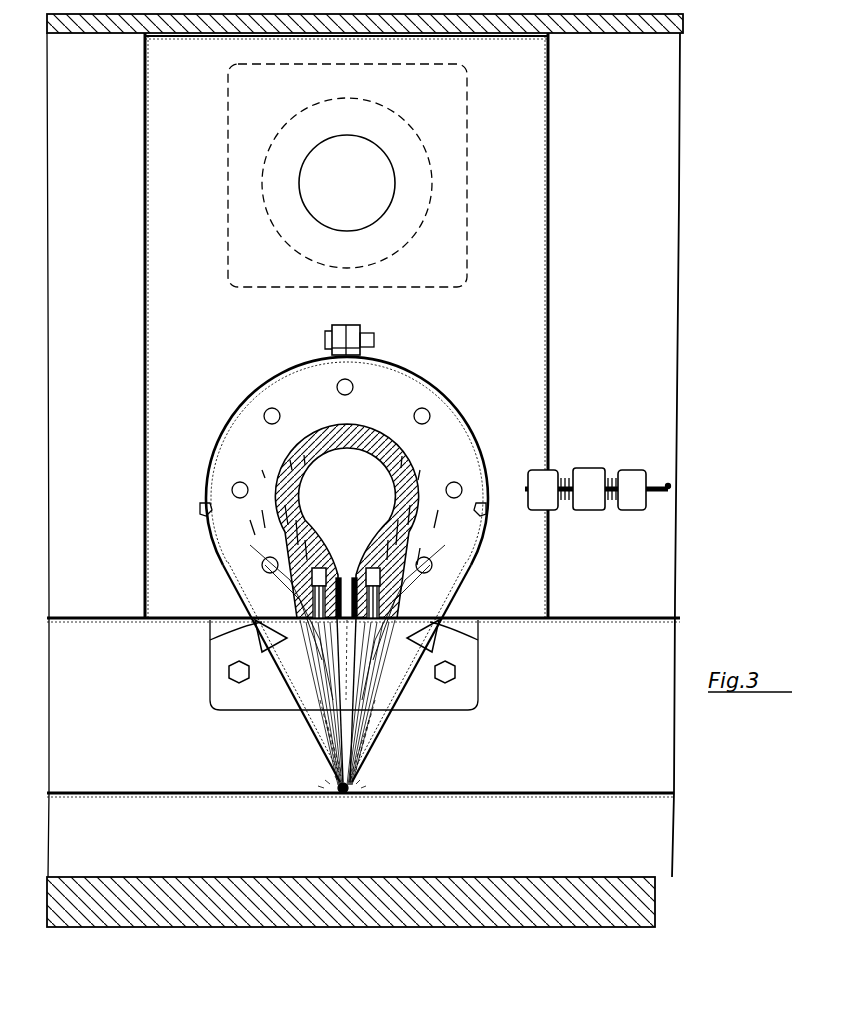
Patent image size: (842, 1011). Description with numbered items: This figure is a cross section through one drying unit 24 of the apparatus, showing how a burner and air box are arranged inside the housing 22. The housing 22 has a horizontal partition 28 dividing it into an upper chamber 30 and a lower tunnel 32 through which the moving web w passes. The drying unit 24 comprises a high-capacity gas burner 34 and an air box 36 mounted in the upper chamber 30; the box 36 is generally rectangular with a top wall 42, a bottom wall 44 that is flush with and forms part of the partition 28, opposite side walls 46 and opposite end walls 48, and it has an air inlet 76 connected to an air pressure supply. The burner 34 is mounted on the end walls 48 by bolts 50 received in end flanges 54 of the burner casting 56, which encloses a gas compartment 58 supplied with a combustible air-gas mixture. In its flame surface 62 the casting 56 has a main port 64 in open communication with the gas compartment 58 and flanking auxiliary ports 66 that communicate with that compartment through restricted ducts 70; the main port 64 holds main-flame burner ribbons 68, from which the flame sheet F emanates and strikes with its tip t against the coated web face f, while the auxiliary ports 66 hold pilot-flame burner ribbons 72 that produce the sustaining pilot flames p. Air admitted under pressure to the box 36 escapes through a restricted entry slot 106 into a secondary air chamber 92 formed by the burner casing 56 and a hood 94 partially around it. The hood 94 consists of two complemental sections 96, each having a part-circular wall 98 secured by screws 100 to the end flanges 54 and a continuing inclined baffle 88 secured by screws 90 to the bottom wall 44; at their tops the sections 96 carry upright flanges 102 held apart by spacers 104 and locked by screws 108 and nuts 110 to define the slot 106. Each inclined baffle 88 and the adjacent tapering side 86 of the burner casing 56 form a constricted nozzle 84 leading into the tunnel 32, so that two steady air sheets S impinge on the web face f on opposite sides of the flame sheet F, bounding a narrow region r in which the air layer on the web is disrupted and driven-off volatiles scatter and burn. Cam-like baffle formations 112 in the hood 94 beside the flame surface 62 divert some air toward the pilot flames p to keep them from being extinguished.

The housing 22 is at (664, 22).
The drying unit 24 is at (582, 350).
The horizontal partition 28 is at (81, 622).
The upper chamber 30 is at (648, 221).
The lower tunnel 32 is at (640, 734).
The gas burner 34 is at (282, 452).
The air box 36 is at (554, 172).
The top wall 42 is at (487, 36).
The bottom wall 44 is at (500, 622).
The side walls 46 is at (145, 256).
The end walls 48 is at (517, 126).
The bolts 50 is at (414, 415).
The end flanges 54 is at (240, 450).
The burner casting 56 is at (396, 462).
The gas compartment 58 is at (366, 493).
The flame surface 62 is at (336, 678).
The main port 64 is at (338, 540).
The auxiliary ports 66 is at (372, 566).
The main-flame burner ribbons 68 is at (420, 592).
The ducts 70 is at (345, 576).
The pilot-flame burner ribbons 72 is at (313, 600).
The air inlet 76 is at (383, 146).
The nozzles 84 is at (265, 565).
The tapering side 86 is at (250, 545).
The inclined baffle 88 is at (262, 622).
The screws 90 is at (268, 640).
The secondary air chamber 92 is at (318, 413).
The hood 94 is at (434, 378).
The hood sections 96 is at (206, 468).
The part-circular wall 98 is at (264, 380).
The screws 100 is at (204, 510).
The upright flanges 102 is at (334, 335).
The spacers 104 is at (341, 326).
The entry slot 106 is at (352, 330).
The screws 108 is at (332, 345).
The nuts 110 is at (374, 336).
The cam-like baffle formations 112 is at (248, 632).
The flame sheet F is at (302, 705).
The air sheets S is at (316, 724).
The pilot flames p is at (326, 693).
The tip t is at (362, 786).
The coated web face f is at (505, 793).
The web w is at (466, 797).
The region r is at (356, 797).